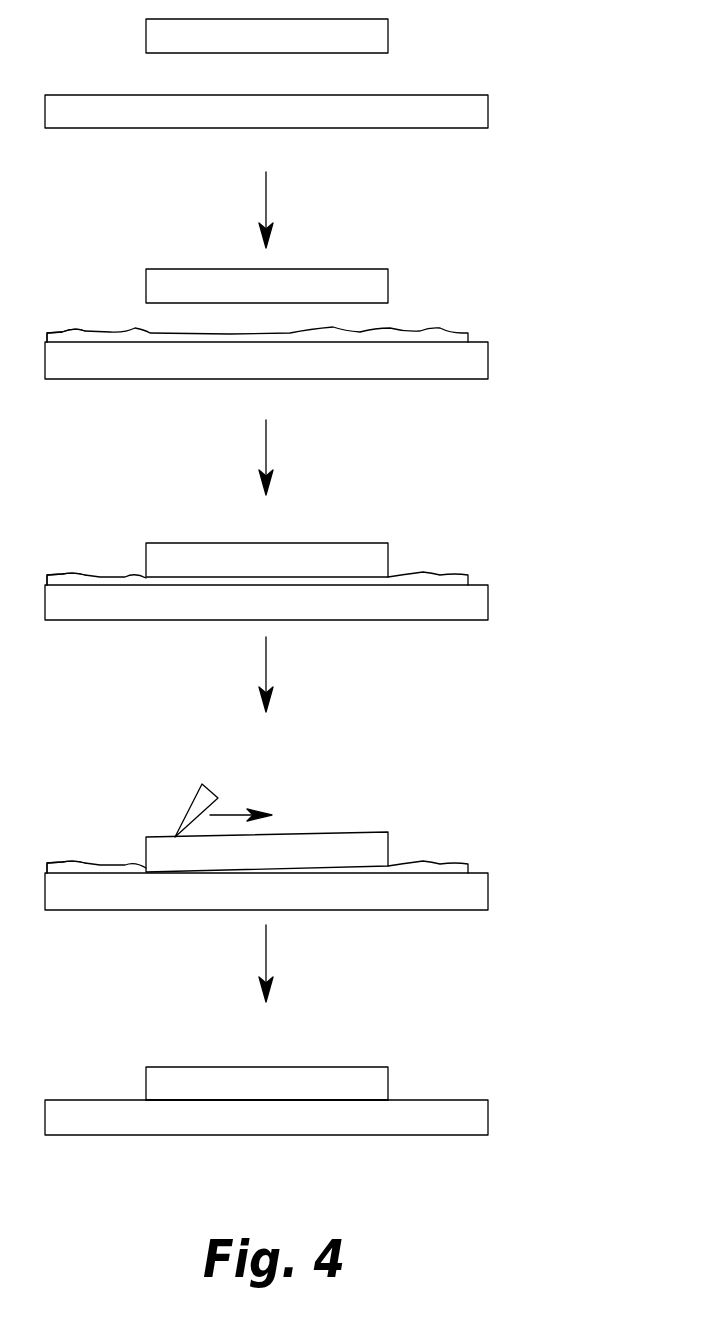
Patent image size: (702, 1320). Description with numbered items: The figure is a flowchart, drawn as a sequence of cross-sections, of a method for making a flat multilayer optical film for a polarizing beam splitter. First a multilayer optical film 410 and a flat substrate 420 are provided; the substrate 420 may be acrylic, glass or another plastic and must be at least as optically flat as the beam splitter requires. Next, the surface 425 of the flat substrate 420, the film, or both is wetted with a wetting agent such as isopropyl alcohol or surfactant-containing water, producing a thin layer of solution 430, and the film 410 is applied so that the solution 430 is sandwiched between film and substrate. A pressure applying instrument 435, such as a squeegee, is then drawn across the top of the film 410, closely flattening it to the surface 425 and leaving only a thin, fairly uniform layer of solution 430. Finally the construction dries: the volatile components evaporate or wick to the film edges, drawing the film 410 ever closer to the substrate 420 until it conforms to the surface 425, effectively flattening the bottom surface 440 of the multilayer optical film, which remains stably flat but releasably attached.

The multilayer optical film 410 is at (372, 42).
The flat substrate 420 is at (475, 115).
The surface of the flat substrate 425 is at (72, 343).
The thin layer of solution 430 is at (448, 337).
The pressure applying instrument 435 is at (198, 798).
The bottom surface of the multilayer optical film 440 is at (193, 1102).